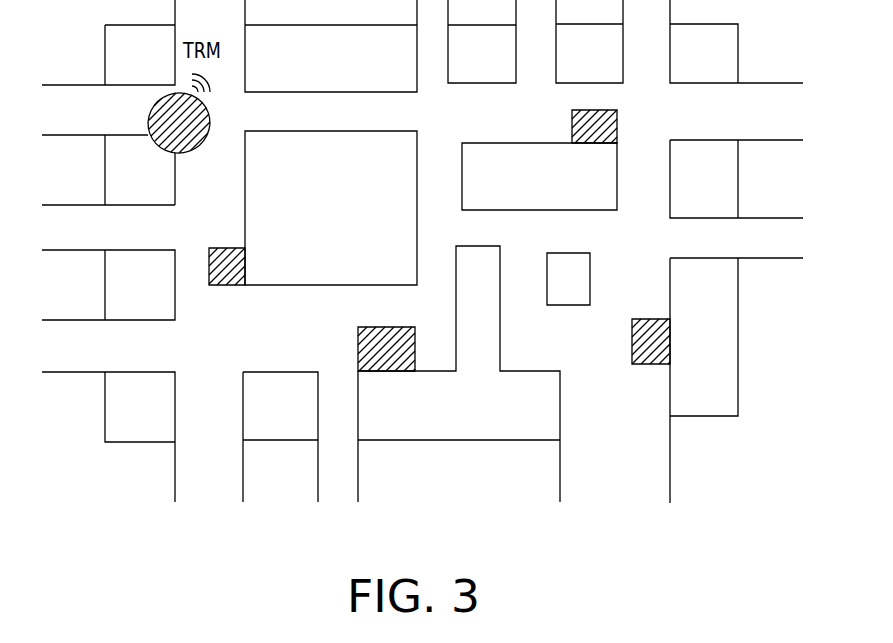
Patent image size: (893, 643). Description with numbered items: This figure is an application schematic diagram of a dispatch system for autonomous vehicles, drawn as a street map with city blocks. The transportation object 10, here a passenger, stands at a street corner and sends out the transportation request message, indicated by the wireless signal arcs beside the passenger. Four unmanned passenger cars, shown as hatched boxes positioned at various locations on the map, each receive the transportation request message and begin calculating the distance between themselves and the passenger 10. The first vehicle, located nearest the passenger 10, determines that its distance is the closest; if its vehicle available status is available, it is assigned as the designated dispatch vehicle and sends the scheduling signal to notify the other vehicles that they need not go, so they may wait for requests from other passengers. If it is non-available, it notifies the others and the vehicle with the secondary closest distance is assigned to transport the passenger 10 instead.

The transportation object 10 is at (210, 119).